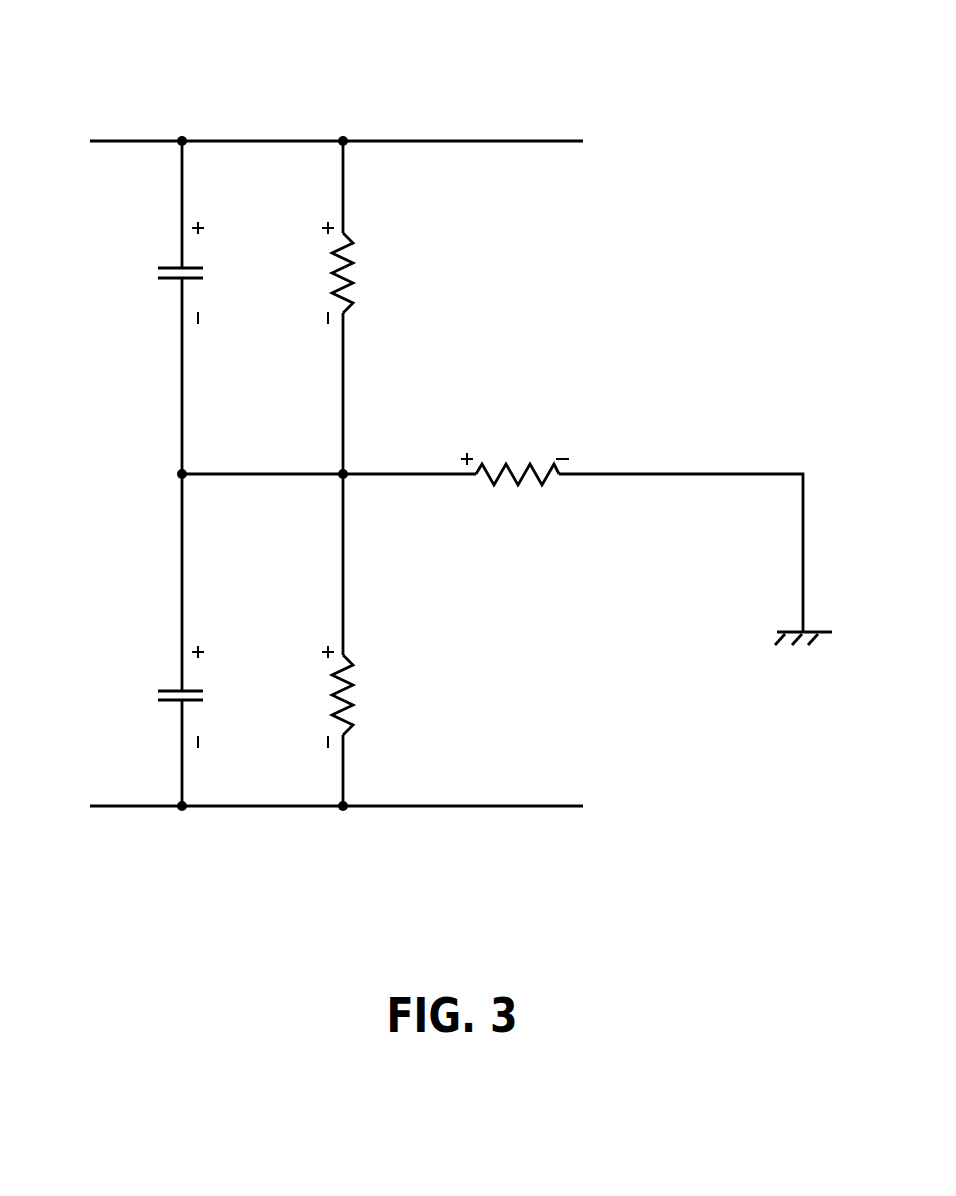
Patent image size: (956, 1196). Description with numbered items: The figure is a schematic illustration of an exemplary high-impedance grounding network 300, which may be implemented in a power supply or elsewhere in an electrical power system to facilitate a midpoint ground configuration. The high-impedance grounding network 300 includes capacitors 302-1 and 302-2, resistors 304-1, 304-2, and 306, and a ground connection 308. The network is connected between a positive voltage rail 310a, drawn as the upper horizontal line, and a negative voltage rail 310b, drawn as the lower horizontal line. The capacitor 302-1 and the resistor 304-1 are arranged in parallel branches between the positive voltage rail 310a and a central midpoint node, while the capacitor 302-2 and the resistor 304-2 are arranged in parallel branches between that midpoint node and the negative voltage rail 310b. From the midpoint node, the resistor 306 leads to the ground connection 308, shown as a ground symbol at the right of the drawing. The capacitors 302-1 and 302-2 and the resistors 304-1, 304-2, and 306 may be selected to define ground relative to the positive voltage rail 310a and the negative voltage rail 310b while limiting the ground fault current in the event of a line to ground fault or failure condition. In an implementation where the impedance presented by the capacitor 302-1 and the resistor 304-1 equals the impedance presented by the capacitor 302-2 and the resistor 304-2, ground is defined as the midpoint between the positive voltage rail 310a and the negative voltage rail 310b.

The high-impedance grounding network 300 is at (655, 44).
The capacitor 302-1 is at (156, 272).
The capacitor 302-2 is at (152, 697).
The resistor 304-1 is at (358, 272).
The resistor 304-2 is at (356, 700).
The resistor 306 is at (513, 458).
The ground connection 308 is at (709, 473).
The positive voltage rail 310a is at (131, 141).
The negative voltage rail 310b is at (142, 808).